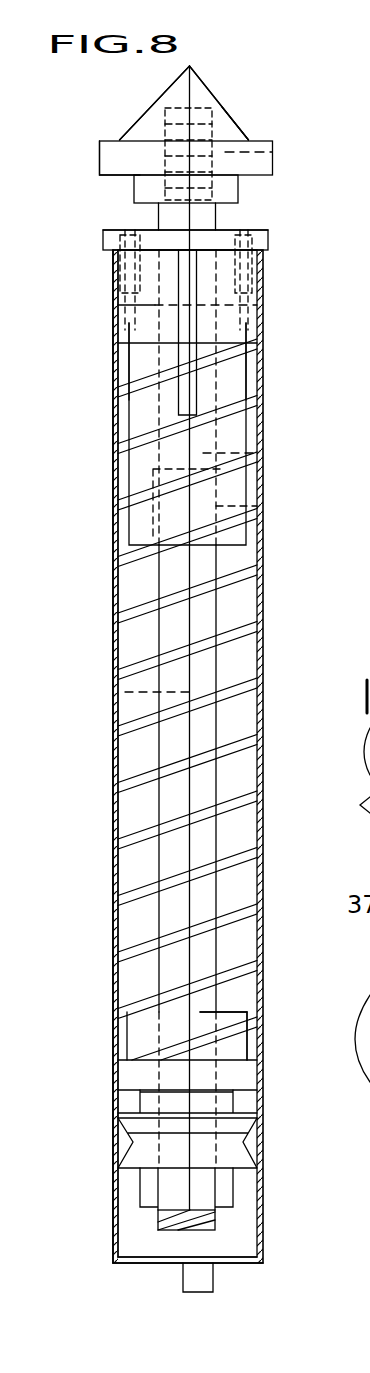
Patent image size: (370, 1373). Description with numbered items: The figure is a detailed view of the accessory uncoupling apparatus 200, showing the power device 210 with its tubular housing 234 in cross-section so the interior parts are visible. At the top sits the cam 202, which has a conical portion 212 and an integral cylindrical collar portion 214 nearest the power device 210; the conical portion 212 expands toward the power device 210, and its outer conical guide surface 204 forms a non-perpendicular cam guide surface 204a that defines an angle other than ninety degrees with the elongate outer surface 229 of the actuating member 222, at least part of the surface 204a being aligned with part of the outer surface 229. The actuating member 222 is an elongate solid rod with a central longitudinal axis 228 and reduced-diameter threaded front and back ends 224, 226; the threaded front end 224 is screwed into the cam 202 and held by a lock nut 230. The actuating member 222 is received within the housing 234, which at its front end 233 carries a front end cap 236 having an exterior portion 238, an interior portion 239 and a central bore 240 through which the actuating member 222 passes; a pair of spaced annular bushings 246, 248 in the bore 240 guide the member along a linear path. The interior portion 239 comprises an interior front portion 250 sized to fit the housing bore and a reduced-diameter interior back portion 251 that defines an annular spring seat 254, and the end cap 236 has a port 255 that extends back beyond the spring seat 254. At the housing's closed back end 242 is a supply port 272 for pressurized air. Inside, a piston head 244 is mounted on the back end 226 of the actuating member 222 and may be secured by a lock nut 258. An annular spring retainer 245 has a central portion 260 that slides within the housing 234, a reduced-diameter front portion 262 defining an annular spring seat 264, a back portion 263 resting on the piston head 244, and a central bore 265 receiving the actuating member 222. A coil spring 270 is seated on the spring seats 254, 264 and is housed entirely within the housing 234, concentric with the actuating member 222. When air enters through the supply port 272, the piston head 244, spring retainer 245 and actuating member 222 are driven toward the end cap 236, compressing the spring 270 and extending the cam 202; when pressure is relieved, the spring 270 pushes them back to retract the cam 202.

The accessory uncoupling apparatus 200 is at (263, 770).
The cam 202 is at (198, 84).
The outer conical guide surface 204 is at (143, 138).
The non-perpendicular cam guide surface 204a is at (213, 102).
The power device 210 is at (113, 287).
The conical portion 212 is at (230, 128).
The cylindrical collar portion 214 is at (120, 160).
The actuating member 222 is at (175, 800).
The threaded front end 224 is at (272, 152).
The threaded back end 226 is at (225, 1230).
The central longitudinal axis 228 is at (118, 693).
The elongate outer surface 229 is at (175, 580).
The lock nut 230 is at (135, 190).
The front end 233 is at (263, 270).
The housing 234 is at (113, 487).
The front end cap 236 is at (262, 226).
The exterior portion 238 is at (110, 240).
The interior portion 239 is at (130, 327).
The central bore 240 is at (250, 452).
The back end 242 is at (148, 1266).
The piston head 244 is at (230, 1148).
The spring retainer 245 is at (237, 1050).
The annular bushing 246 is at (222, 297).
The annular bushing 248 is at (257, 503).
The interior front portion 250 is at (250, 333).
The interior back portion 251 is at (140, 428).
The annular spring seat 254 is at (118, 367).
The port 255 is at (215, 380).
The lock nut 258 is at (150, 1200).
The central portion 260 is at (245, 1080).
The front portion 262 is at (148, 1025).
The back portion 263 is at (150, 1105).
The annular spring seat 264 is at (133, 1058).
The central bore 265 is at (240, 1005).
The coil spring 270 is at (132, 893).
The supply port 272 is at (215, 1293).